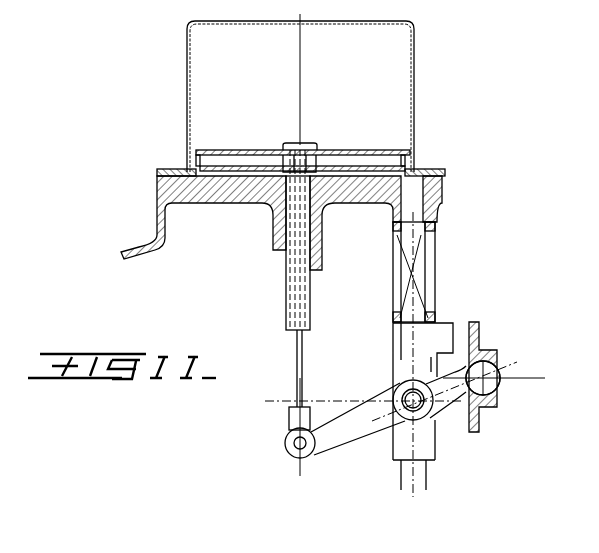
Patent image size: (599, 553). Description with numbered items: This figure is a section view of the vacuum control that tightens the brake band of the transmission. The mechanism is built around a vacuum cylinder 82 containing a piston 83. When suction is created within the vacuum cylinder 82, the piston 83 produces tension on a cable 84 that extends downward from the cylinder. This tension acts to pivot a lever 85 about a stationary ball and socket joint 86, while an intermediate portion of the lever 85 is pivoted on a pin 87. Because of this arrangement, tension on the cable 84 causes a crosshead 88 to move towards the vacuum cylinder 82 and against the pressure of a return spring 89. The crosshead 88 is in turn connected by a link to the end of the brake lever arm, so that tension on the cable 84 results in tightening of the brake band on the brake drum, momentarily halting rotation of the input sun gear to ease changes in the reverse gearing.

The vacuum cylinder 82 is at (378, 108).
The piston 83 is at (378, 152).
The cable 84 is at (305, 353).
The lever 85 is at (351, 440).
The ball and socket joint 86 is at (494, 383).
The pin 87 is at (437, 420).
The crosshead 88 is at (452, 325).
The return spring 89 is at (428, 283).